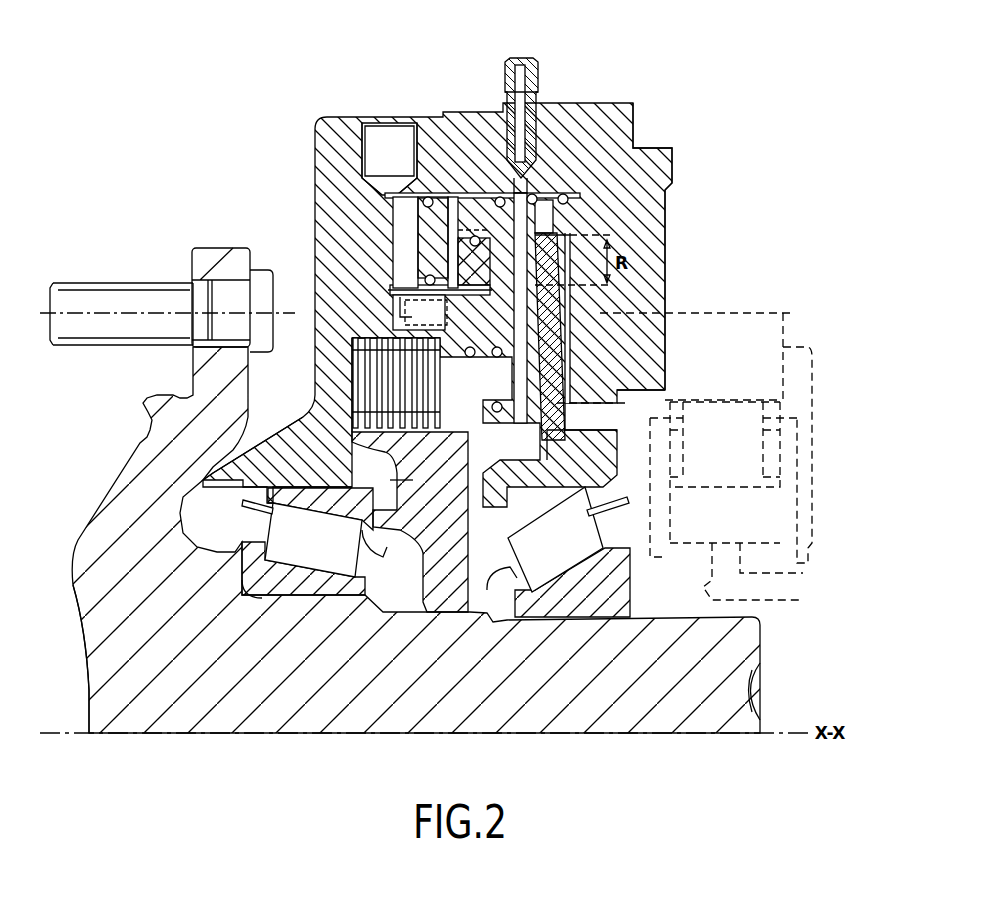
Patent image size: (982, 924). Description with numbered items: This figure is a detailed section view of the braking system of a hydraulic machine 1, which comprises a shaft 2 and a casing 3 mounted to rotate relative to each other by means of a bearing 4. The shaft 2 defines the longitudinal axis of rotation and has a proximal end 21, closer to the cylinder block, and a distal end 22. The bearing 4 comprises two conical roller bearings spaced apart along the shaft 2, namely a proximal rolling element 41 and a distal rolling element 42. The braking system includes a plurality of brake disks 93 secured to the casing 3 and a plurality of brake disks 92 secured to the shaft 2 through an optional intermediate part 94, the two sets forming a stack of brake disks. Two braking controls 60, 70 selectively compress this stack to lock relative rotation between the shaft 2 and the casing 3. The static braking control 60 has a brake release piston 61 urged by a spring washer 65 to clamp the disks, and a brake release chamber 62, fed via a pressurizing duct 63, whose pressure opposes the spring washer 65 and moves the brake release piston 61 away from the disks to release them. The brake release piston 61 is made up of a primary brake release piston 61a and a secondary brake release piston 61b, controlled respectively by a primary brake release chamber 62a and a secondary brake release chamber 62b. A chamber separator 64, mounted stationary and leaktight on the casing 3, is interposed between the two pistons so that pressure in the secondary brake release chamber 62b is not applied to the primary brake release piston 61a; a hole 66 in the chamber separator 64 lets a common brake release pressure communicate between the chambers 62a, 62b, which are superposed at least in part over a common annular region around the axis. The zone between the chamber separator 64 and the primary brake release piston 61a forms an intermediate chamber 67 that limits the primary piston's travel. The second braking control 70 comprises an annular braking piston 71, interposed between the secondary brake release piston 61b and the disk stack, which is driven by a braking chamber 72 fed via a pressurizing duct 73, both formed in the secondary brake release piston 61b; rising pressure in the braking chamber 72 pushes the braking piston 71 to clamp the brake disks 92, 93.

The hydraulic machine 1 is at (138, 225).
The shaft 2 is at (538, 719).
The casing 3 is at (315, 247).
The bearing 4 is at (436, 591).
The proximal end 21 is at (752, 705).
The distal end 22 is at (89, 707).
The proximal rolling element 41 is at (535, 576).
The distal rolling element 42 is at (323, 547).
The braking control 60 is at (428, 215).
The brake release piston 61 is at (428, 232).
The primary brake release piston 61a is at (440, 215).
The secondary brake release piston 61b is at (503, 210).
The brake release chamber 62 is at (363, 118).
The primary brake release chamber 62a is at (362, 150).
The secondary brake release chamber 62b is at (398, 195).
The pressurizing duct 63 is at (403, 137).
The chamber separator 64 is at (313, 140).
The spring washer 65 is at (575, 440).
The hole 66 is at (395, 290).
The intermediate chamber 67 is at (420, 312).
The braking control 70 is at (643, 246).
The braking piston 71 is at (540, 355).
The braking chamber 72 is at (540, 362).
The pressurizing duct 73 is at (520, 133).
The brake disks 92 is at (352, 415).
The brake disks 93 is at (352, 340).
The intermediate part 94 is at (303, 425).